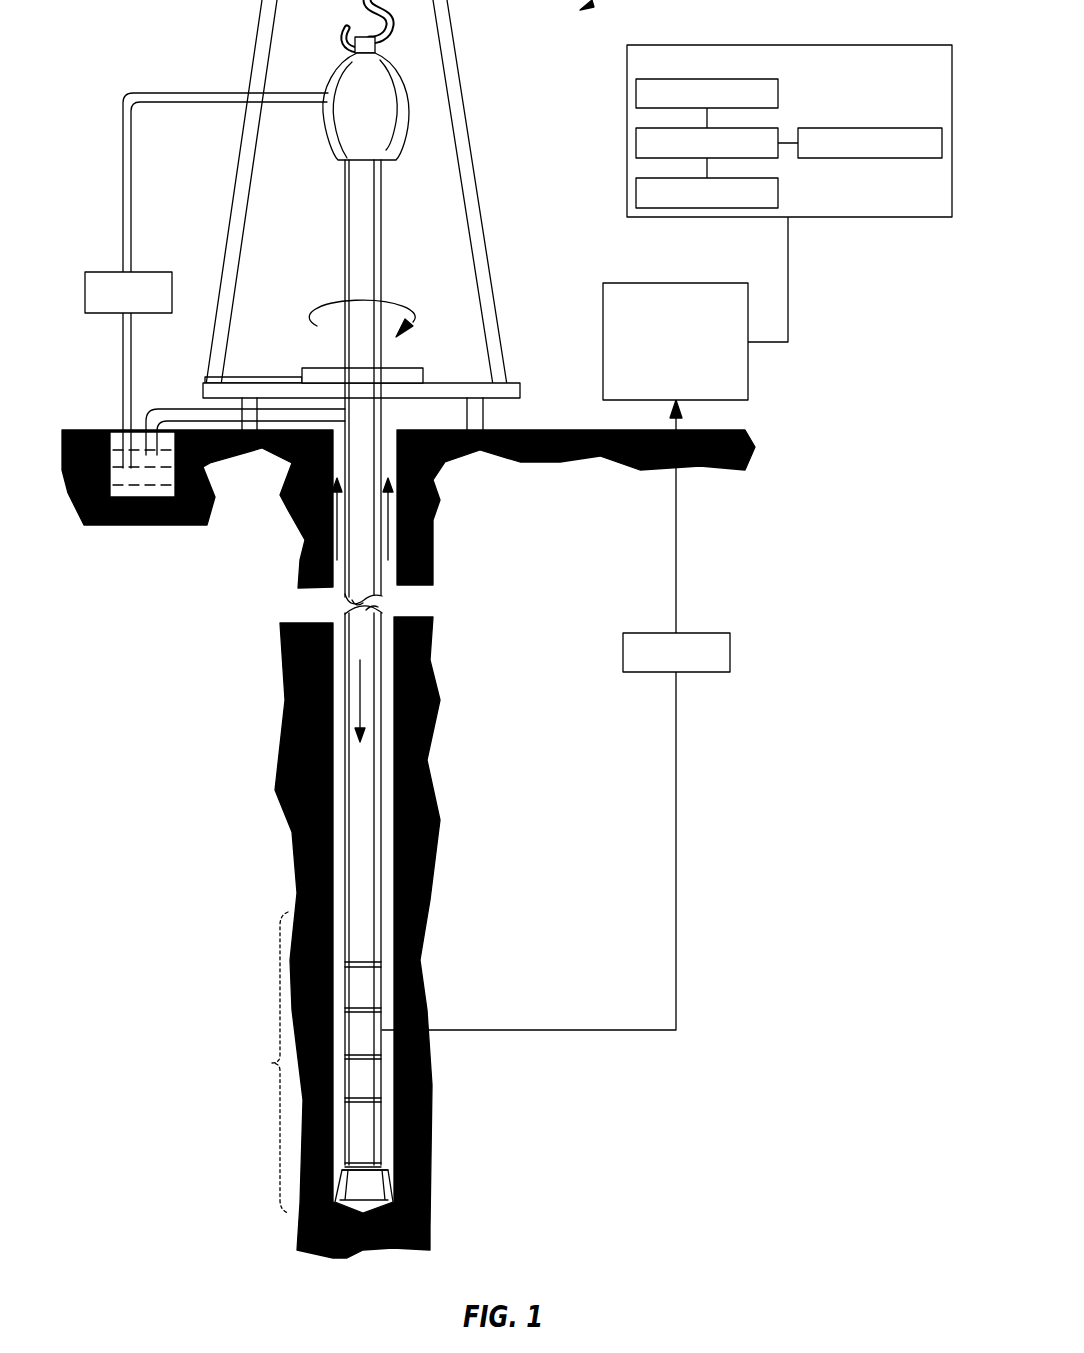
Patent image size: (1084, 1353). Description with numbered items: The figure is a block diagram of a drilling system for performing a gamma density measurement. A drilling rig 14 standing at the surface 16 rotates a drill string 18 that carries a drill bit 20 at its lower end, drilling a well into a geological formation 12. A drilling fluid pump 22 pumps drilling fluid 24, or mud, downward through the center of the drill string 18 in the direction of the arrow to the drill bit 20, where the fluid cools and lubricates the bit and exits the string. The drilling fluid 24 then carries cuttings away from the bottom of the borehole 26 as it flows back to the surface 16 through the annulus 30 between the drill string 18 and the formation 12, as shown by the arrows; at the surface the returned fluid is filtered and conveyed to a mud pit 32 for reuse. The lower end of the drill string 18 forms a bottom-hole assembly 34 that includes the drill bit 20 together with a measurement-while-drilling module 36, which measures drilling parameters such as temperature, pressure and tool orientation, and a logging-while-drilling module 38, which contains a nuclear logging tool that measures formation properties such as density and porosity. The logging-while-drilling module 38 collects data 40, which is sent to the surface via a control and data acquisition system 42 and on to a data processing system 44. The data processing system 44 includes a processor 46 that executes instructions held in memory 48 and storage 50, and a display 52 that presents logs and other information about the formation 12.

The geological formation 12 is at (560, 812).
The drilling rig 14 is at (497, 112).
The surface 16 is at (560, 424).
The drill string 18 is at (362, 424).
The drill bit 20 is at (367, 1192).
The drilling fluid pump 22 is at (85, 291).
The drilling fluid 24 is at (337, 520).
The borehole 26 is at (340, 828).
The annulus 30 is at (390, 424).
The mud pit 32 is at (140, 490).
The bottom-hole assembly 34 is at (277, 1063).
The measurement-while-drilling module 36 is at (367, 990).
The logging-while-drilling module 38 is at (367, 1077).
The data 40 is at (713, 633).
The control and data acquisition system 42 is at (675, 283).
The data processing system 44 is at (790, 45).
The processor 46 is at (760, 128).
The memory 48 is at (636, 92).
The storage 50 is at (778, 192).
The display 52 is at (872, 128).